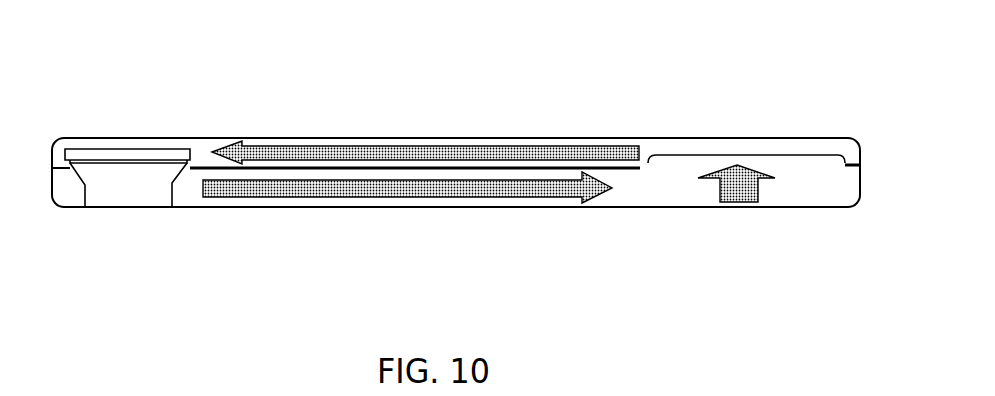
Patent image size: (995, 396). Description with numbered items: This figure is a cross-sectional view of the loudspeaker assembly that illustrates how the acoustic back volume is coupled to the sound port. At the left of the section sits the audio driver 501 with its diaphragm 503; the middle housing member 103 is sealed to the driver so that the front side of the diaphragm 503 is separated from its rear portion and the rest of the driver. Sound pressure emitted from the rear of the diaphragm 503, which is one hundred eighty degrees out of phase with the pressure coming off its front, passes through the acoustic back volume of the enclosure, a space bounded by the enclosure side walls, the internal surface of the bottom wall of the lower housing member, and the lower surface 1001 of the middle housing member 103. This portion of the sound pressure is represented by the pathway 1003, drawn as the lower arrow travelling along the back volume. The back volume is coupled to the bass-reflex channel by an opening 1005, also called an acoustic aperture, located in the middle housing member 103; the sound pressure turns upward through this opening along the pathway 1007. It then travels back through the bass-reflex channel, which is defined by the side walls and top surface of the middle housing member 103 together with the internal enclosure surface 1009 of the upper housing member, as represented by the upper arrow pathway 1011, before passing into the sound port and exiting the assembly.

The middle housing member 103 is at (610, 160).
The audio driver 501 is at (150, 195).
The diaphragm 503 is at (109, 152).
The lower surface of middle housing member 1001 is at (362, 178).
The pathway 1003 is at (472, 190).
The opening 1005 is at (743, 153).
The pathway 1007 is at (737, 203).
The internal enclosure surface of upper housing member 1009 is at (507, 148).
The pathway 1011 is at (434, 150).